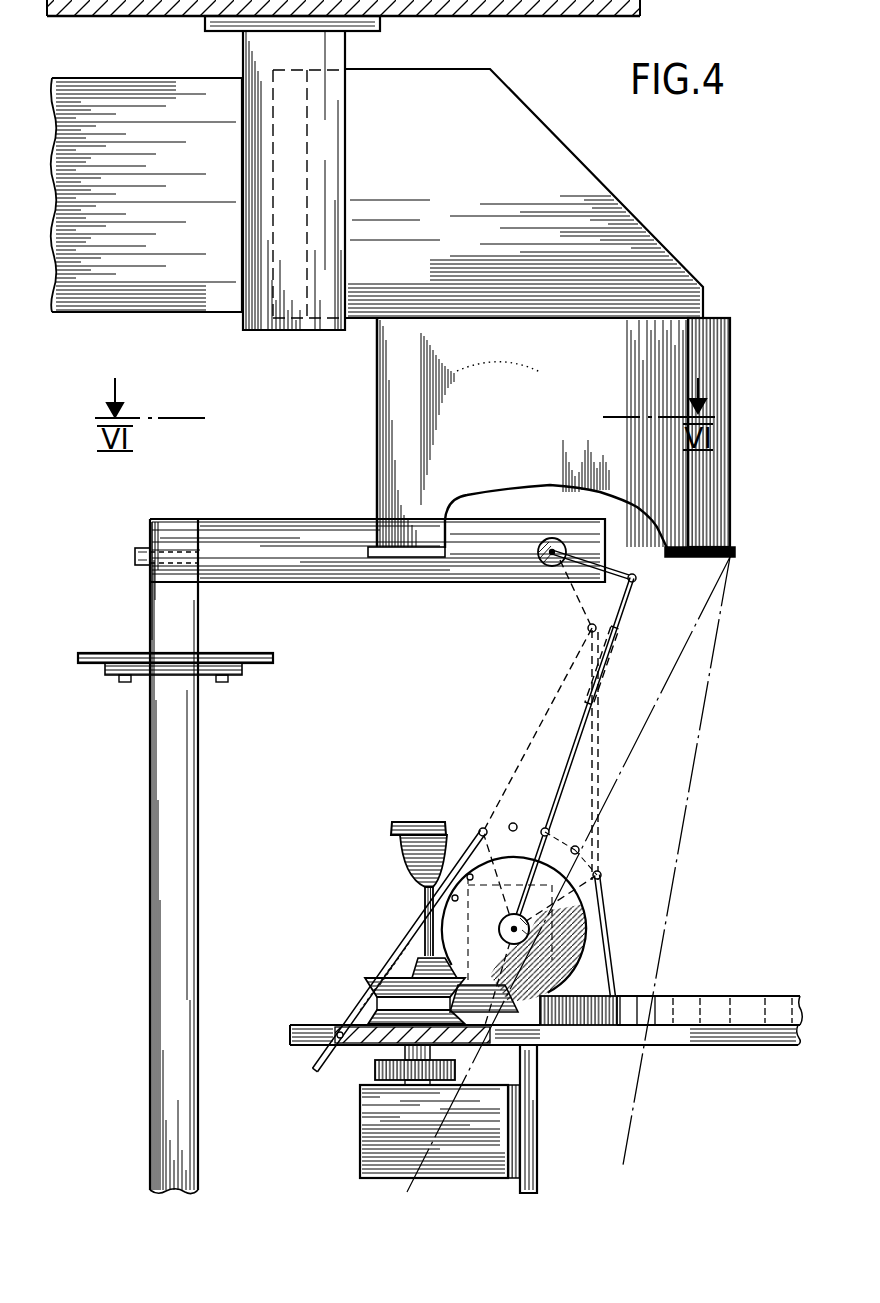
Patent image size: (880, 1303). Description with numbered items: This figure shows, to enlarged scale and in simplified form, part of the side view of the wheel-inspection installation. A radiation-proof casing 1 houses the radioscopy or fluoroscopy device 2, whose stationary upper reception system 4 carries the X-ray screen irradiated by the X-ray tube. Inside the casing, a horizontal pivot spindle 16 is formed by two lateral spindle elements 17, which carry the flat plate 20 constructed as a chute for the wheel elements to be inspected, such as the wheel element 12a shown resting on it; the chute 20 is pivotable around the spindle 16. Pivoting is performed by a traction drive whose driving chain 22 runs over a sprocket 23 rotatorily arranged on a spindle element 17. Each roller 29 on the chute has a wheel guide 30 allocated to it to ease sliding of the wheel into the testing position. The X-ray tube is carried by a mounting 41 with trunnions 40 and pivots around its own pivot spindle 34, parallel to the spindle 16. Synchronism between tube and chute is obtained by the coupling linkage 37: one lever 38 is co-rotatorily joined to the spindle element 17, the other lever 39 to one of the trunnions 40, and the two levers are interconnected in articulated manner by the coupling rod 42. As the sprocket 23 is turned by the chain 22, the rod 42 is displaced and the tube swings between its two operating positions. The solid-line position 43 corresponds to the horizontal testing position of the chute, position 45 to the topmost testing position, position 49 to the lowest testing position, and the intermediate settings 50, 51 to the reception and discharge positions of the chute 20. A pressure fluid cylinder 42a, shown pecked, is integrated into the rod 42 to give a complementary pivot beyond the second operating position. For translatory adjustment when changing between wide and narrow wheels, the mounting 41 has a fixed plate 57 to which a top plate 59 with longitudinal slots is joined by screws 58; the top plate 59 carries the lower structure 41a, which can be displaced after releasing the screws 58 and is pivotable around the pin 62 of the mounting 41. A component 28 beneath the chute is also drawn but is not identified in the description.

The radiation-proof casing 1 is at (544, 12).
The radioscopy or fluoroscopy device 2 is at (578, 157).
The stationary upper reception system 4 is at (117, 122).
The receptacle 12a is at (405, 840).
The horizontal pivot spindle 16 is at (500, 935).
The lateral spindle elements 17 is at (513, 940).
The flat plate (chute) 20 is at (733, 1031).
The driving chain 22 is at (362, 998).
The sprocket 23 is at (572, 943).
The motor 28 is at (380, 1103).
The roller 29 is at (380, 985).
The wheel guide 30 is at (677, 1012).
The pivot spindle for the X-ray tube 34 is at (550, 545).
The coupling linkage 37 is at (585, 741).
The lever 38 is at (537, 848).
The lever 39 is at (612, 570).
The trunnions 40 is at (548, 563).
The mounting 41 is at (150, 746).
The lower structure 41a is at (176, 848).
The coupling rod 42 is at (626, 596).
The pressure fluid cylinder 42a is at (605, 690).
The position of coupling rod 43 is at (549, 833).
The position of coupling rod 45 is at (482, 829).
The position of coupling rod 49 is at (598, 879).
The intermediate setting 50 is at (514, 824).
The intermediate setting 51 is at (579, 851).
The fixed plate 57 is at (135, 655).
The screws 58 is at (222, 683).
The top plate 59 is at (123, 683).
The pin 62 is at (135, 556).